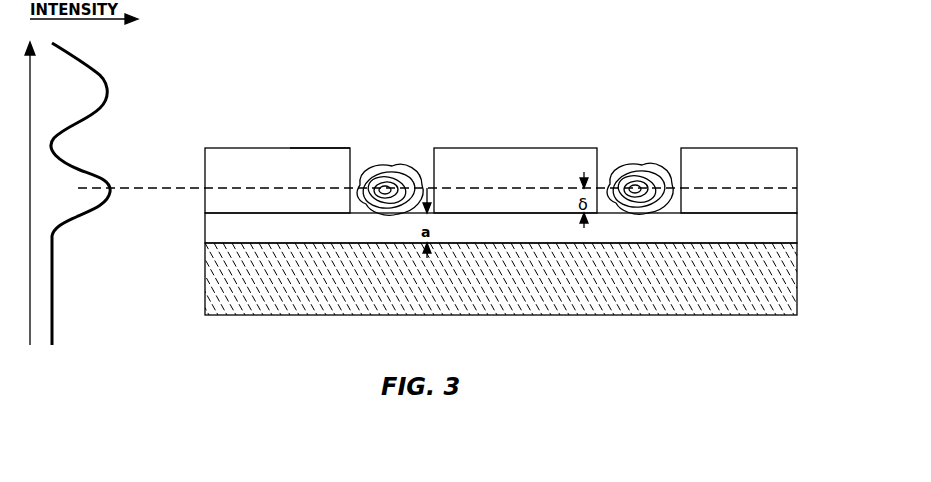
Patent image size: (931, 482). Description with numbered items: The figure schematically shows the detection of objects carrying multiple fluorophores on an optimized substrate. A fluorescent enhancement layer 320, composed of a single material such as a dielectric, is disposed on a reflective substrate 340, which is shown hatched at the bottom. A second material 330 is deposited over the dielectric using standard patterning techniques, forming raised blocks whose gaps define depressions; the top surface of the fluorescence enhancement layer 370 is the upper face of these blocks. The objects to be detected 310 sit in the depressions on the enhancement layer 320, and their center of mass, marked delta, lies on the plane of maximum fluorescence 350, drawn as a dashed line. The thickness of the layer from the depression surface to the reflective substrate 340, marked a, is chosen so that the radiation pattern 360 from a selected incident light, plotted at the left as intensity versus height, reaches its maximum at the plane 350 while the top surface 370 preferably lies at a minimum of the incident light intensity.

The objects to be detected 310 is at (394, 168).
The fluorescent enhancement layer 320 is at (792, 228).
The second material 330 is at (280, 155).
The reflective substrate 340 is at (263, 316).
The plane of maximum fluorescence 350 is at (532, 186).
The radiation pattern 360 is at (113, 85).
The top surface of the fluorescence enhancement layer 370 is at (310, 147).